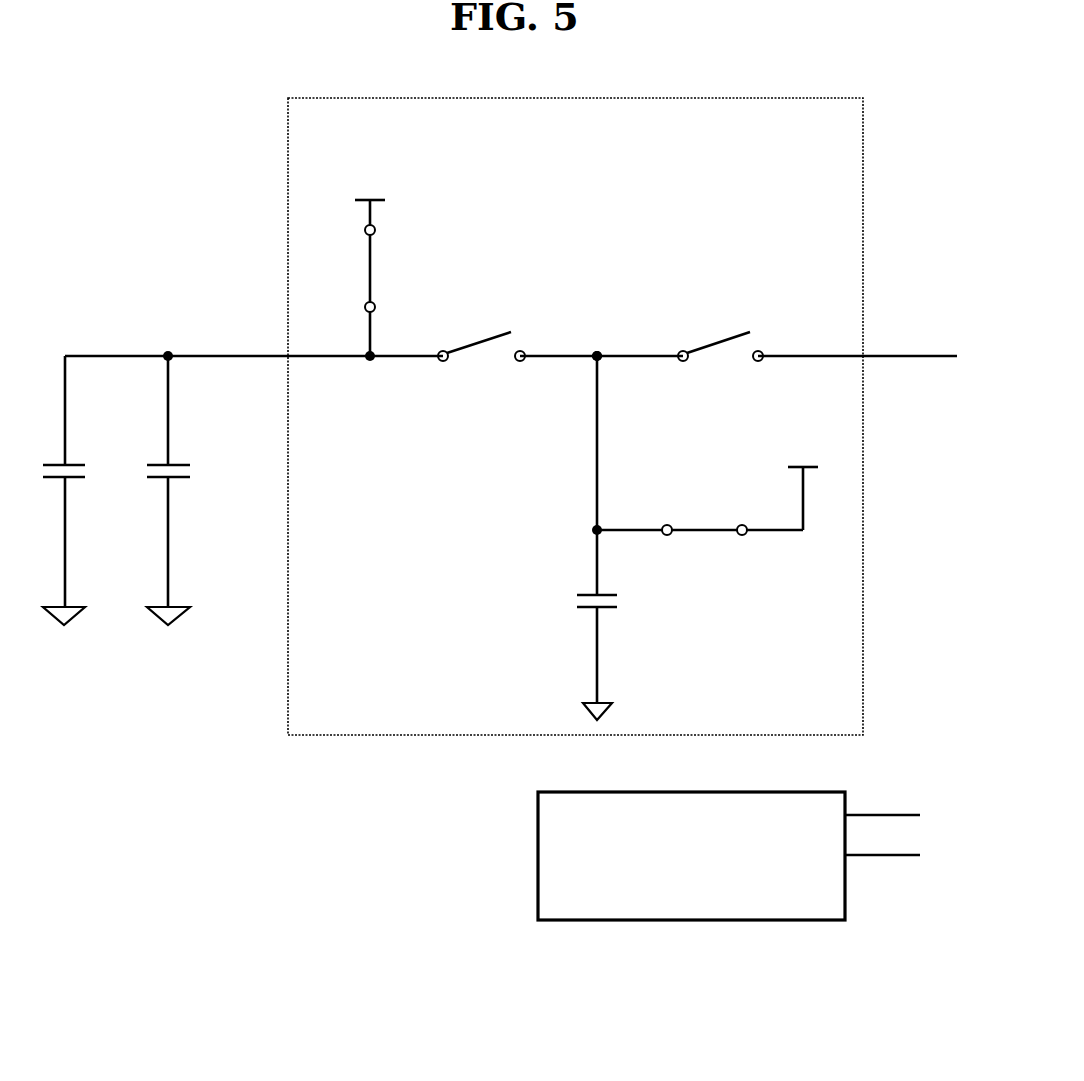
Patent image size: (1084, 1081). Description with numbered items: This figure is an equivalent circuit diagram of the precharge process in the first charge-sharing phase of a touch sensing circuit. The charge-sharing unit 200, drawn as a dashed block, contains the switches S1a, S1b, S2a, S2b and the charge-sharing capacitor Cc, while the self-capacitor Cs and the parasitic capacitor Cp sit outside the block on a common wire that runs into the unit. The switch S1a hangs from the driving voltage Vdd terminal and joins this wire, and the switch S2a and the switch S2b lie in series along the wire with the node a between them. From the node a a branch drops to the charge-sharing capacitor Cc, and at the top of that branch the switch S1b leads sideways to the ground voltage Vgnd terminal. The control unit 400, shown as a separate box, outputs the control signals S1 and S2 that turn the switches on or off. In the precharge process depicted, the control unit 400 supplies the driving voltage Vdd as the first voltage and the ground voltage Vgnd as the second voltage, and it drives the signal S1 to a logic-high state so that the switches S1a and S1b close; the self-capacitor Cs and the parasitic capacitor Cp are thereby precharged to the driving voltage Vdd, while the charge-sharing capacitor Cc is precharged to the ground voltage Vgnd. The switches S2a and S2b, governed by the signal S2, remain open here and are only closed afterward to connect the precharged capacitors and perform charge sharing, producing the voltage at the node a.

The charge-sharing unit 200 is at (360, 737).
The control unit 400 is at (691, 856).
The node a is at (603, 350).
The parasitic capacitor Cp is at (86, 490).
The self-capacitor Cs is at (188, 490).
The charge-sharing capacitor Cc is at (617, 538).
The switch S1a is at (342, 290).
The switch S1b is at (700, 510).
The switch S2a is at (481, 365).
The switch S2b is at (720, 365).
The driving voltage Vdd is at (370, 193).
The ground voltage Vgnd is at (803, 478).
The control signal S1 is at (904, 818).
The control signal S2 is at (904, 858).